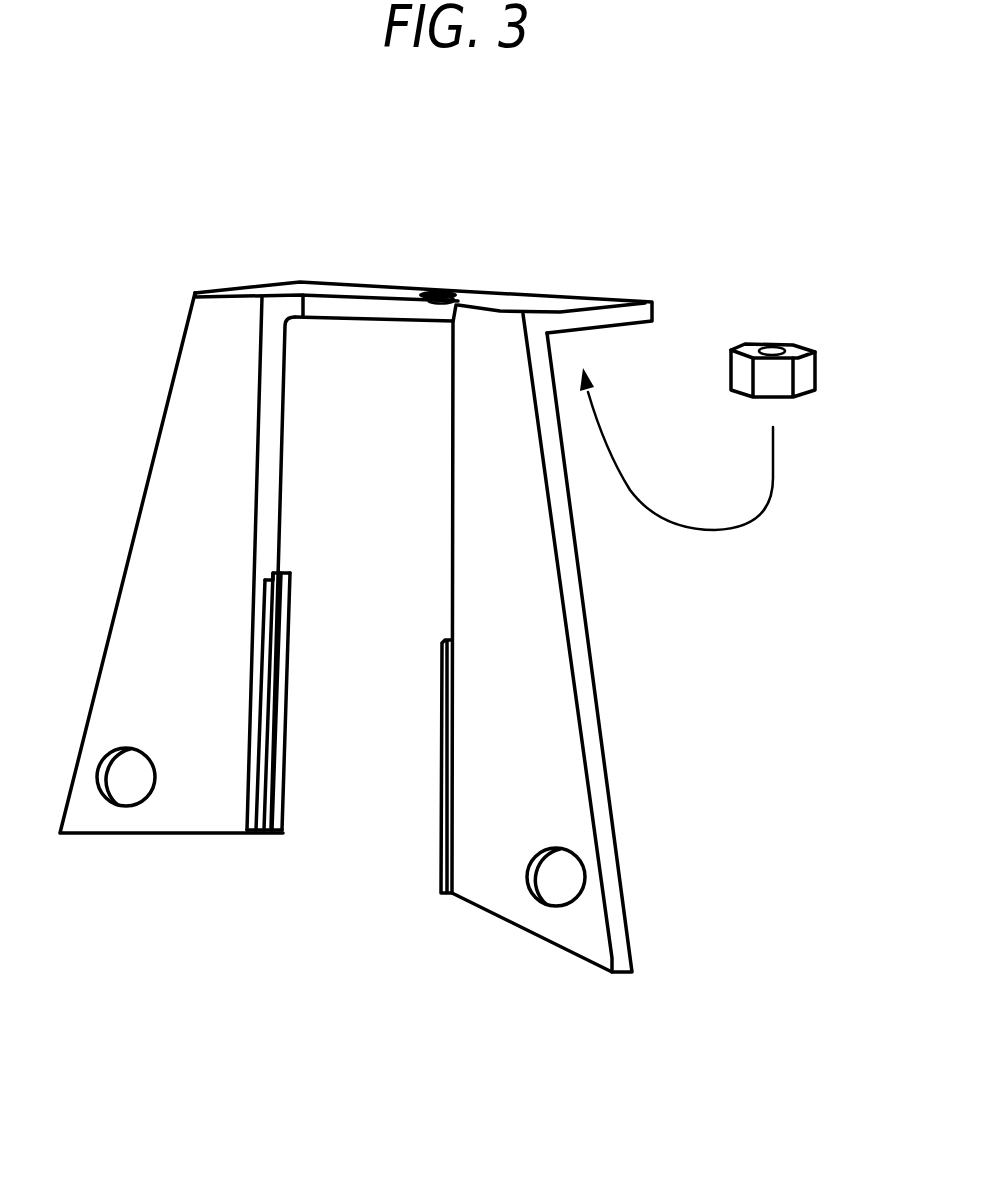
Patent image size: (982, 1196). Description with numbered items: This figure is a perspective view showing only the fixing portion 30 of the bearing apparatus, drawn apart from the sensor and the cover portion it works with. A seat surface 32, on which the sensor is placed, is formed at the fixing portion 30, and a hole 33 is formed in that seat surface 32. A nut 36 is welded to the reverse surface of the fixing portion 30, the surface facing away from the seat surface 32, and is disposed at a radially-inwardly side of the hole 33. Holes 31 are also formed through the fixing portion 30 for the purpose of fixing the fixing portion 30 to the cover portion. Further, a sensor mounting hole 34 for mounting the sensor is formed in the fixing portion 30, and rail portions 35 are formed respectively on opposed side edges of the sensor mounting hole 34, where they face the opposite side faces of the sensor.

The fixing portion 30 is at (636, 236).
The holes 31 is at (117, 780).
The seat surface 32 is at (320, 288).
The hole 33 is at (438, 290).
The sensor mounting hole 34 is at (268, 476).
The rail portions 35 is at (441, 767).
The nut 36 is at (793, 348).